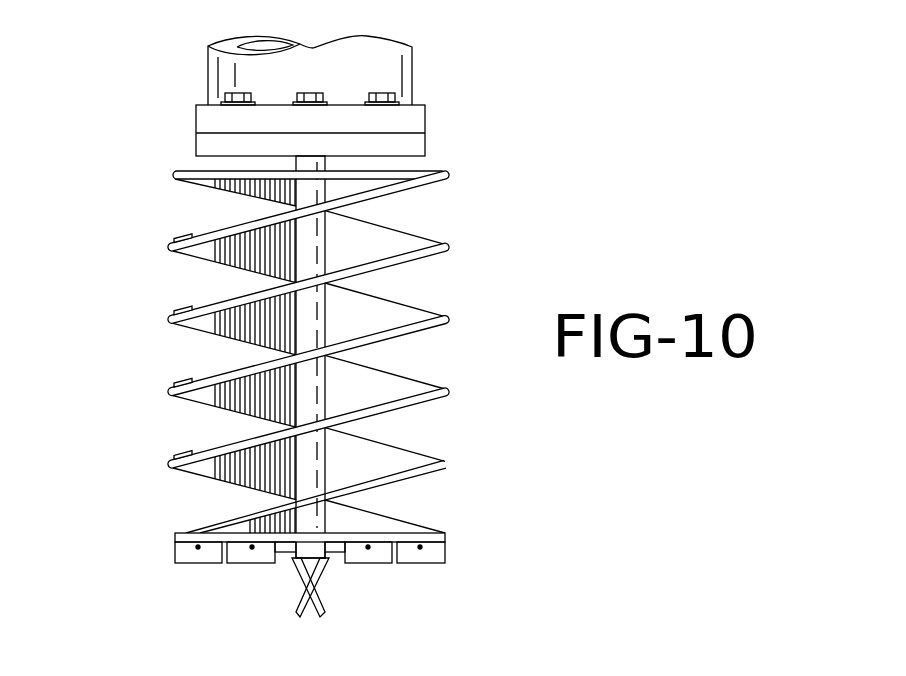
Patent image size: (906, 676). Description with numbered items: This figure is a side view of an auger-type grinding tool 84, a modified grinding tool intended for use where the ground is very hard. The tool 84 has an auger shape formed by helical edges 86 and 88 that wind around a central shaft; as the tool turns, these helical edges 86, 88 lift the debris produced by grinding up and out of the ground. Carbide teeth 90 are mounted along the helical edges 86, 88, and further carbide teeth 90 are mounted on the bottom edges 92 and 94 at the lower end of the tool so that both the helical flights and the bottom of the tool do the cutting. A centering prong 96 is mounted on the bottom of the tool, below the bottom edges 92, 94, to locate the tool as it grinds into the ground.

The auger-type grinding tool 84 is at (398, 250).
The helical edge 86 is at (447, 394).
The helical edge 88 is at (447, 322).
The carbide teeth 90 is at (171, 242).
The bottom edge 92 is at (285, 556).
The bottom edge 94 is at (332, 556).
The centering prong 96 is at (310, 587).